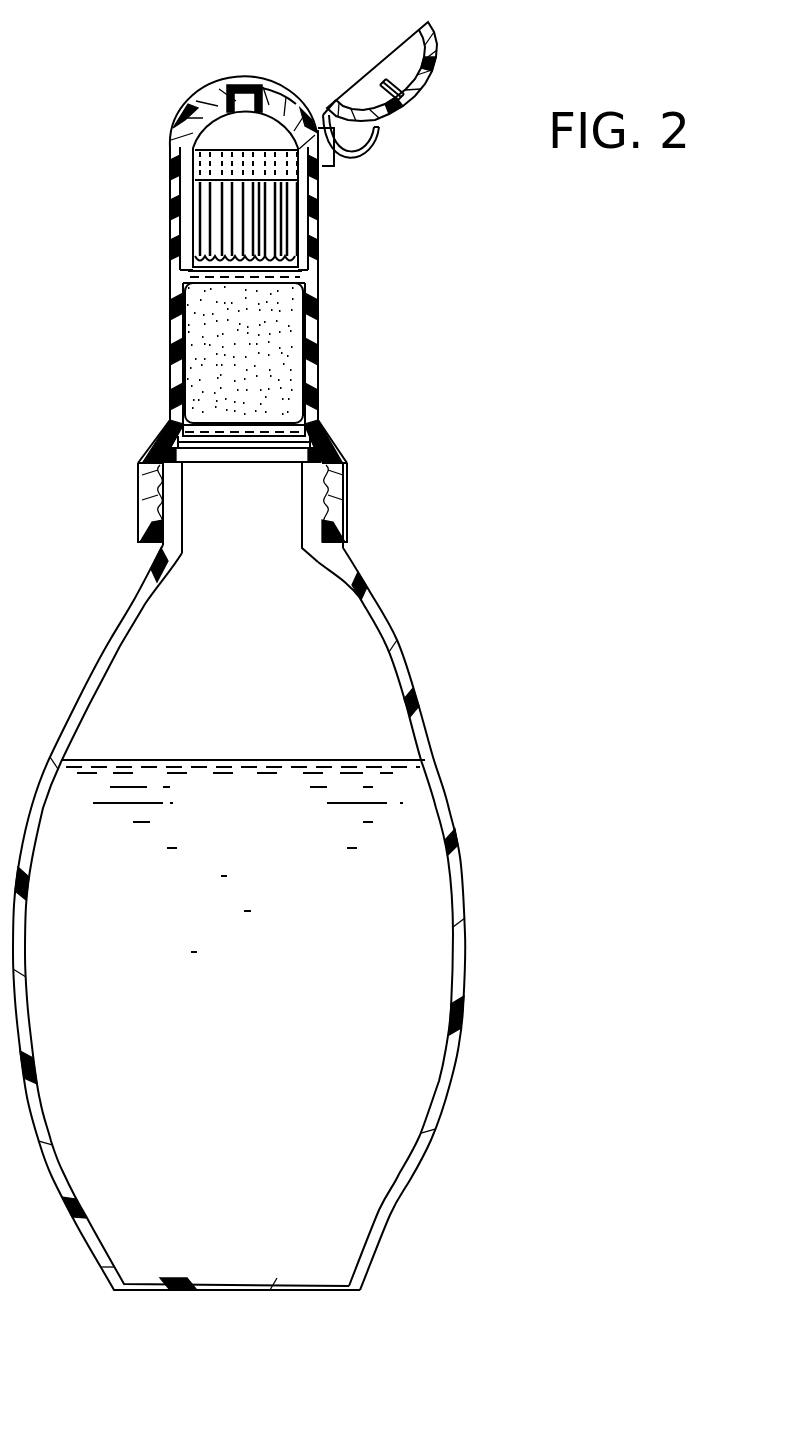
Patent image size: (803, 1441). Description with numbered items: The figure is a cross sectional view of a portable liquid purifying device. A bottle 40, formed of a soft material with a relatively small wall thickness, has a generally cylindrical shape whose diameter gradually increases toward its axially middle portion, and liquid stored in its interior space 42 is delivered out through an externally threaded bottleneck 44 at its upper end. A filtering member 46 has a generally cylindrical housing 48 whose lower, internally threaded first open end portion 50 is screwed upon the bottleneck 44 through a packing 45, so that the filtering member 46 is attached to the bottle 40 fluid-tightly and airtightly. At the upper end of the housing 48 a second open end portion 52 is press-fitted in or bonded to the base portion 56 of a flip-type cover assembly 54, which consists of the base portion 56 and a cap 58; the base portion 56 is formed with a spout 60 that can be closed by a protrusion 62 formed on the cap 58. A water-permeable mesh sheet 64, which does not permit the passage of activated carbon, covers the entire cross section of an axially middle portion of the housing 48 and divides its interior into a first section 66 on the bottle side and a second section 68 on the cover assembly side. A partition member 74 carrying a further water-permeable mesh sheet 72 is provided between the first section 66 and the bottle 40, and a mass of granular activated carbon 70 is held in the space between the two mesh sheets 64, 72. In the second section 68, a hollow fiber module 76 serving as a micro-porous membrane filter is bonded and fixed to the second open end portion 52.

The bottle 40 is at (430, 723).
The interior space 42 is at (258, 714).
The externally threaded bottleneck 44 is at (320, 511).
The packing 45 is at (318, 453).
The filtering member 46 is at (354, 300).
The housing 48 is at (330, 349).
The first open end portion 50 is at (152, 503).
The second open end portion 52 is at (186, 165).
The flip-type cover assembly 54 is at (208, 39).
The base portion 56 is at (276, 102).
The cap 58 is at (429, 52).
The spout 60 is at (243, 92).
The protrusion 62 is at (401, 78).
The water-permeable mesh sheet 64 is at (213, 282).
The first section 66 is at (302, 390).
The second section 68 is at (284, 218).
The granular activated carbon 70 is at (256, 366).
The water-permeable mesh sheet 72 is at (212, 427).
The partition member 74 is at (186, 433).
The hollow fiber module 76 is at (240, 222).